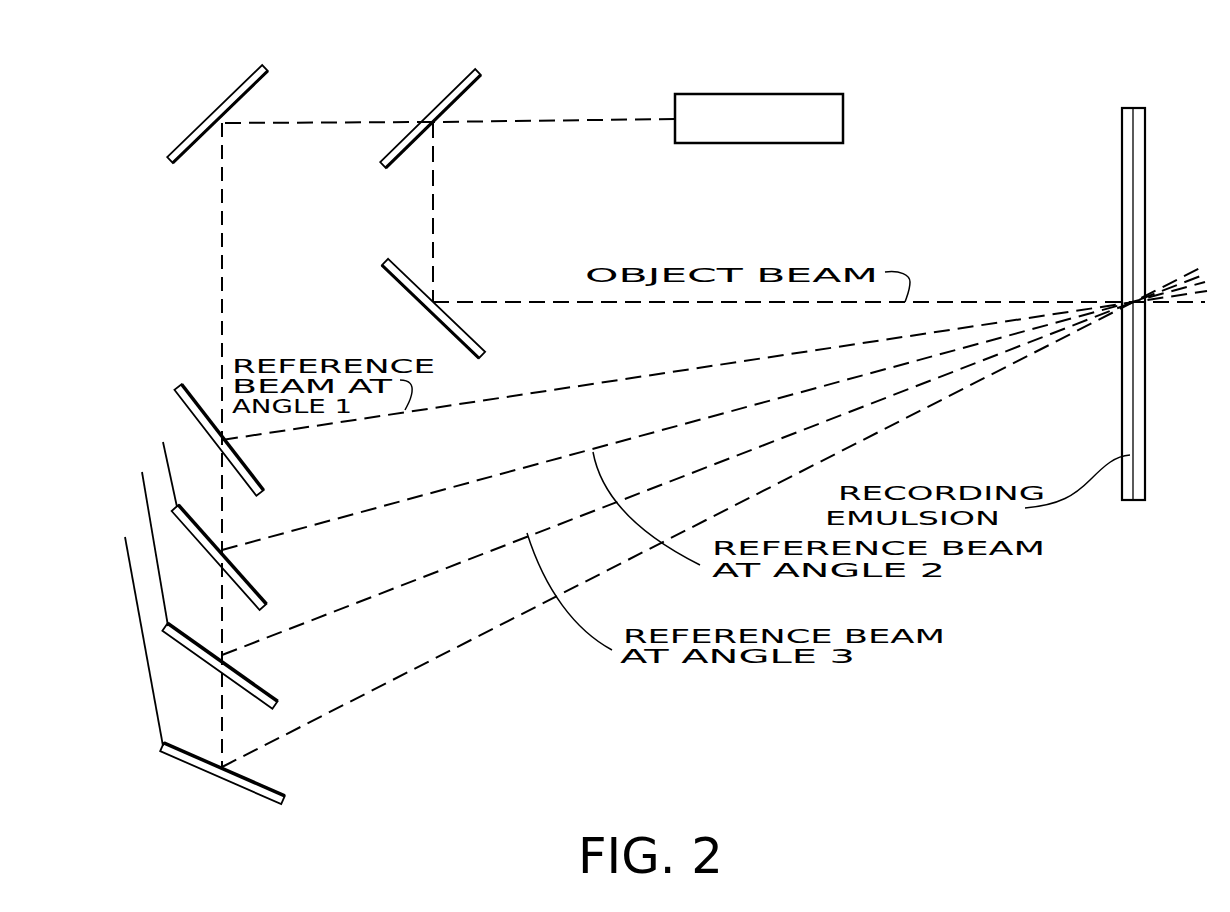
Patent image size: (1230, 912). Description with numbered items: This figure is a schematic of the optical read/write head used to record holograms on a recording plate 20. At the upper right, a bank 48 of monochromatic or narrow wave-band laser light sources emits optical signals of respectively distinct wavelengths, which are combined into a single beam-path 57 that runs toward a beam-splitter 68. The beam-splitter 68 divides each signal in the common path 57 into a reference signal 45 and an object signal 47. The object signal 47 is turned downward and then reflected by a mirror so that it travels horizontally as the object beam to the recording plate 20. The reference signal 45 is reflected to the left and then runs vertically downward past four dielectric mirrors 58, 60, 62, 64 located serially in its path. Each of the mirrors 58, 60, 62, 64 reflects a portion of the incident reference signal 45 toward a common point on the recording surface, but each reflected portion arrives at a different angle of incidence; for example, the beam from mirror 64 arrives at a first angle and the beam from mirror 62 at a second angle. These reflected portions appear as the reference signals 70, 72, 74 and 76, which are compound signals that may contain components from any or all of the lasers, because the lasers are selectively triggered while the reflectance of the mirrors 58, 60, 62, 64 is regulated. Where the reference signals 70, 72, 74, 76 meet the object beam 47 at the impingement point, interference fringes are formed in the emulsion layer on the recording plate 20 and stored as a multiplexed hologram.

The recording plate 20 is at (1122, 112).
The reference signal 45 is at (322, 123).
The object signal 47 is at (433, 187).
The bank of laser light sources 48 is at (778, 94).
The single beam-path 57 is at (560, 118).
The dielectric mirror 58 is at (208, 778).
The dielectric mirror 60 is at (200, 652).
The dielectric mirror 62 is at (180, 530).
The dielectric mirror 64 is at (178, 402).
The beam-splitter 68 is at (450, 96).
The reference signal 70 is at (408, 677).
The reference signal 72 is at (388, 596).
The reference signal 74 is at (360, 513).
The reference signal 76 is at (472, 400).